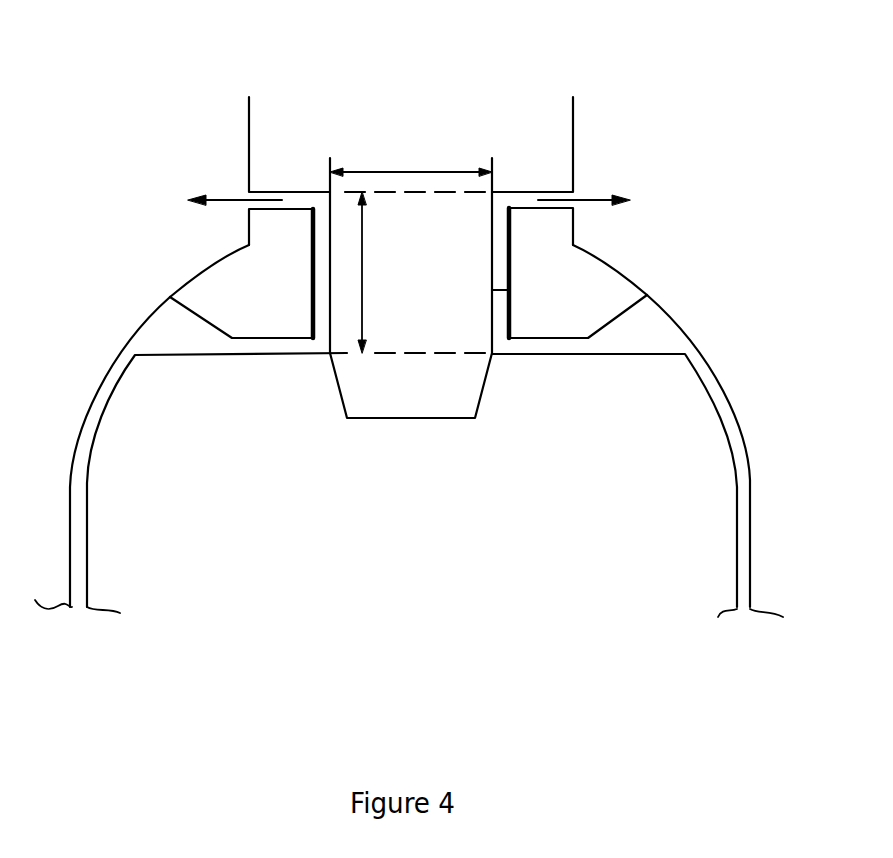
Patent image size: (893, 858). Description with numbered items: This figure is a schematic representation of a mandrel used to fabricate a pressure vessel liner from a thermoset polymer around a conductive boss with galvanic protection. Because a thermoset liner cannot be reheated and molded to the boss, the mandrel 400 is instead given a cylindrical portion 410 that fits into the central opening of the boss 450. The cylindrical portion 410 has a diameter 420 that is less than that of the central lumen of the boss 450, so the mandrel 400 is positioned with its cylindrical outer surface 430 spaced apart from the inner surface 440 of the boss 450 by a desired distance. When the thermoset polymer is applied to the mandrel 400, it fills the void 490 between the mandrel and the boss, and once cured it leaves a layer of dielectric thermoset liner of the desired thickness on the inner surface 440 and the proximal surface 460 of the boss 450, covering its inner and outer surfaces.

The mandrel 400 is at (337, 388).
The cylindrical portion 410 is at (373, 272).
The diameter 420 is at (411, 161).
The cylindrical outer surface 430 is at (509, 290).
The inner surface 440 is at (313, 297).
The boss 450 is at (238, 302).
The proximal surface 460 is at (300, 208).
The void 490 is at (77, 531).